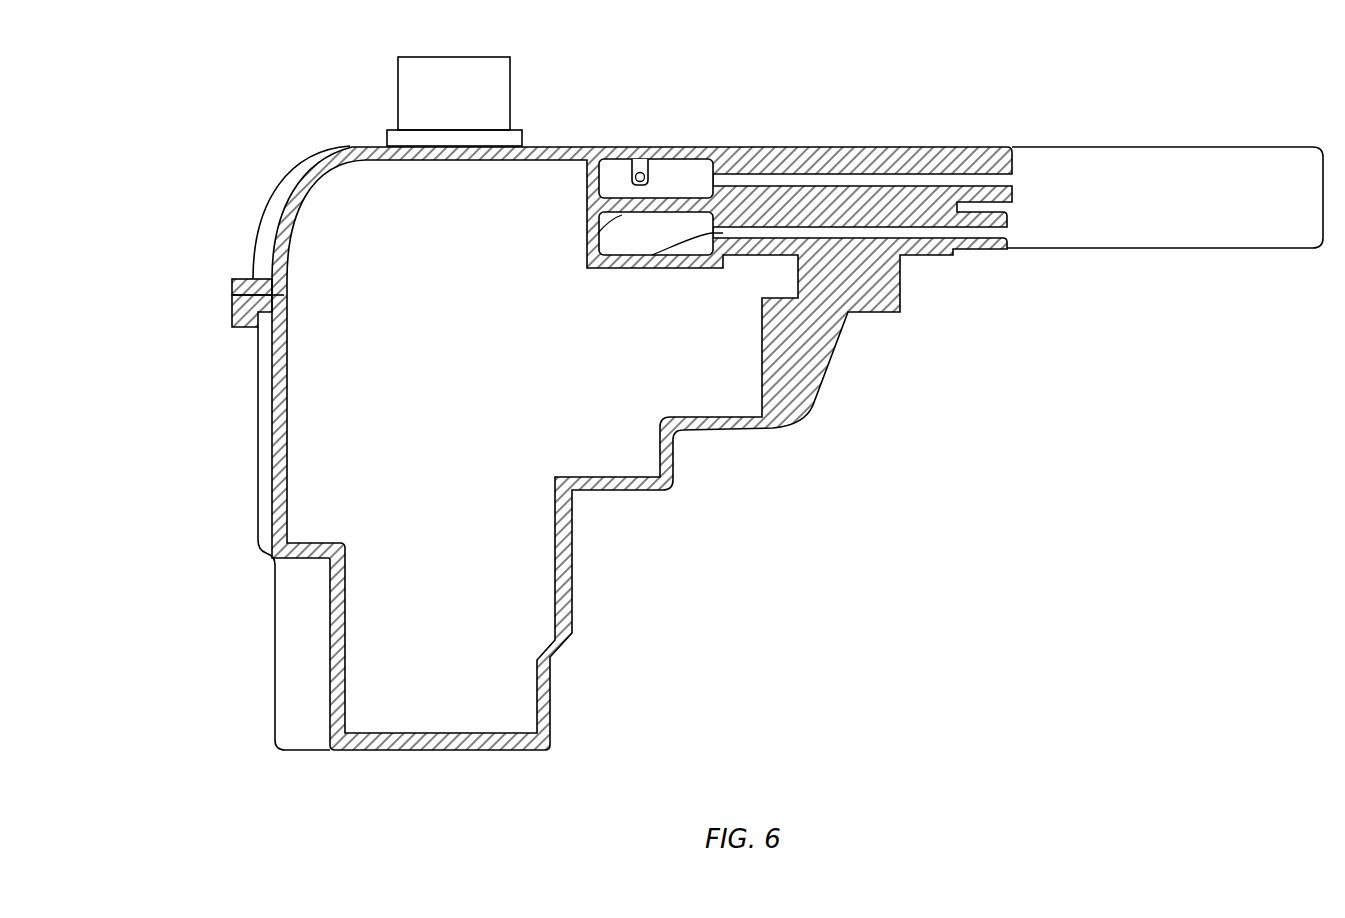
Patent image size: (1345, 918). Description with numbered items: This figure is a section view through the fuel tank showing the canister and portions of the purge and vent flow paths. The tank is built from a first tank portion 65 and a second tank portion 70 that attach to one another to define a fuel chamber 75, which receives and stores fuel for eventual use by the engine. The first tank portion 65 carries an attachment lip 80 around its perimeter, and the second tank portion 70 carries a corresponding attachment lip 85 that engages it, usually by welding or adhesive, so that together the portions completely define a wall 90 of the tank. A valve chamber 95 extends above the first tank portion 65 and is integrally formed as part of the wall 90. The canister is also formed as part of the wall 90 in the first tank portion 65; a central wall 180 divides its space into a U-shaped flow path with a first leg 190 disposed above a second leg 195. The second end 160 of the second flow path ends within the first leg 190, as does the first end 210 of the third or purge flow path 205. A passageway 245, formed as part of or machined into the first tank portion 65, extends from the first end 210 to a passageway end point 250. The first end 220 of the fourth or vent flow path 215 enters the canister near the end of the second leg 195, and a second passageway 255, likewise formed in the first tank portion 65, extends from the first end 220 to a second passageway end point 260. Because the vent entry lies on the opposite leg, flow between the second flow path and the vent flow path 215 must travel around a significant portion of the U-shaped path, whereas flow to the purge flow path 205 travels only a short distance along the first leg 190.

The first tank portion 65 is at (306, 174).
The second tank portion 70 is at (290, 642).
The fuel chamber 75 is at (465, 445).
The attachment lip 80 is at (252, 277).
The attachment lip 85 is at (250, 326).
The wall 90 is at (563, 582).
The valve chamber 95 is at (503, 82).
The second end 160 is at (630, 173).
The central wall 180 is at (598, 233).
The first leg 190 is at (662, 163).
The second leg 195 is at (627, 238).
The third or purge flow path 205 is at (798, 178).
The first end 210 is at (713, 178).
The fourth or vent flow path 215 is at (953, 237).
The first end 220 is at (657, 257).
The passageway 245 is at (866, 178).
The passageway end point 250 is at (1012, 182).
The second passageway 255 is at (790, 233).
The second passageway end point 260 is at (1008, 235).